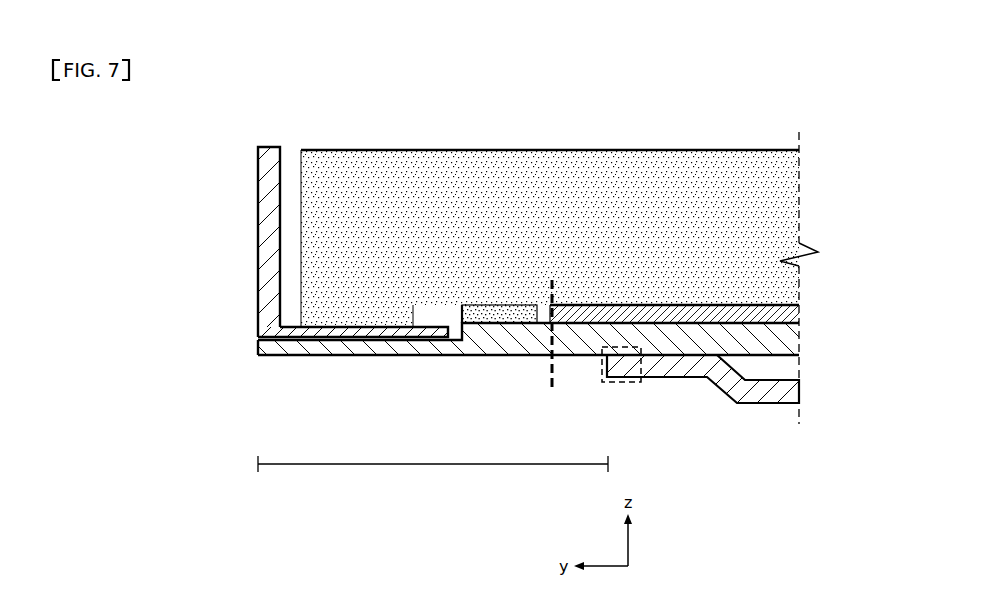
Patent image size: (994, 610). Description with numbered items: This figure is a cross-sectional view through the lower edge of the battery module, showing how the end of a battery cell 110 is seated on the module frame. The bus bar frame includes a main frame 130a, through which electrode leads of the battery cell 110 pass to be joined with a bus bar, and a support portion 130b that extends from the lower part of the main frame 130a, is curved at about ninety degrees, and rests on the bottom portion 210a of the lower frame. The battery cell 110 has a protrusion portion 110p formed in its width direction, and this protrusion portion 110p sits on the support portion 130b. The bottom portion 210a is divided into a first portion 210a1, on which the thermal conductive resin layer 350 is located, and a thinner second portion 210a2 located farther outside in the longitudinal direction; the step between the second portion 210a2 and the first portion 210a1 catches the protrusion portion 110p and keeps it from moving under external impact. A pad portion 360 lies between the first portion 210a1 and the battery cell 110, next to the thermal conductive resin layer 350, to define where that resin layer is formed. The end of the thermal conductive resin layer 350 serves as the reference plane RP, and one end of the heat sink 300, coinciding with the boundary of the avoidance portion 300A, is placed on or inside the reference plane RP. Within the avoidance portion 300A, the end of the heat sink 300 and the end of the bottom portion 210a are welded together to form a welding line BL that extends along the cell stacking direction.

The battery cell 110 is at (467, 172).
The protrusion portion 110p is at (352, 313).
The main frame 130a is at (266, 203).
The support portion 130b is at (430, 338).
The thermal conductive resin layer 350 is at (682, 315).
The pad portion 360 is at (502, 313).
The bottom portion 210a is at (527, 426).
The first portion 210a1 is at (577, 343).
The second portion 210a2 is at (286, 348).
The heat sink 300 is at (760, 395).
The avoidance portion 300A is at (433, 464).
The welding line BL is at (625, 382).
The reference plane RP is at (550, 382).